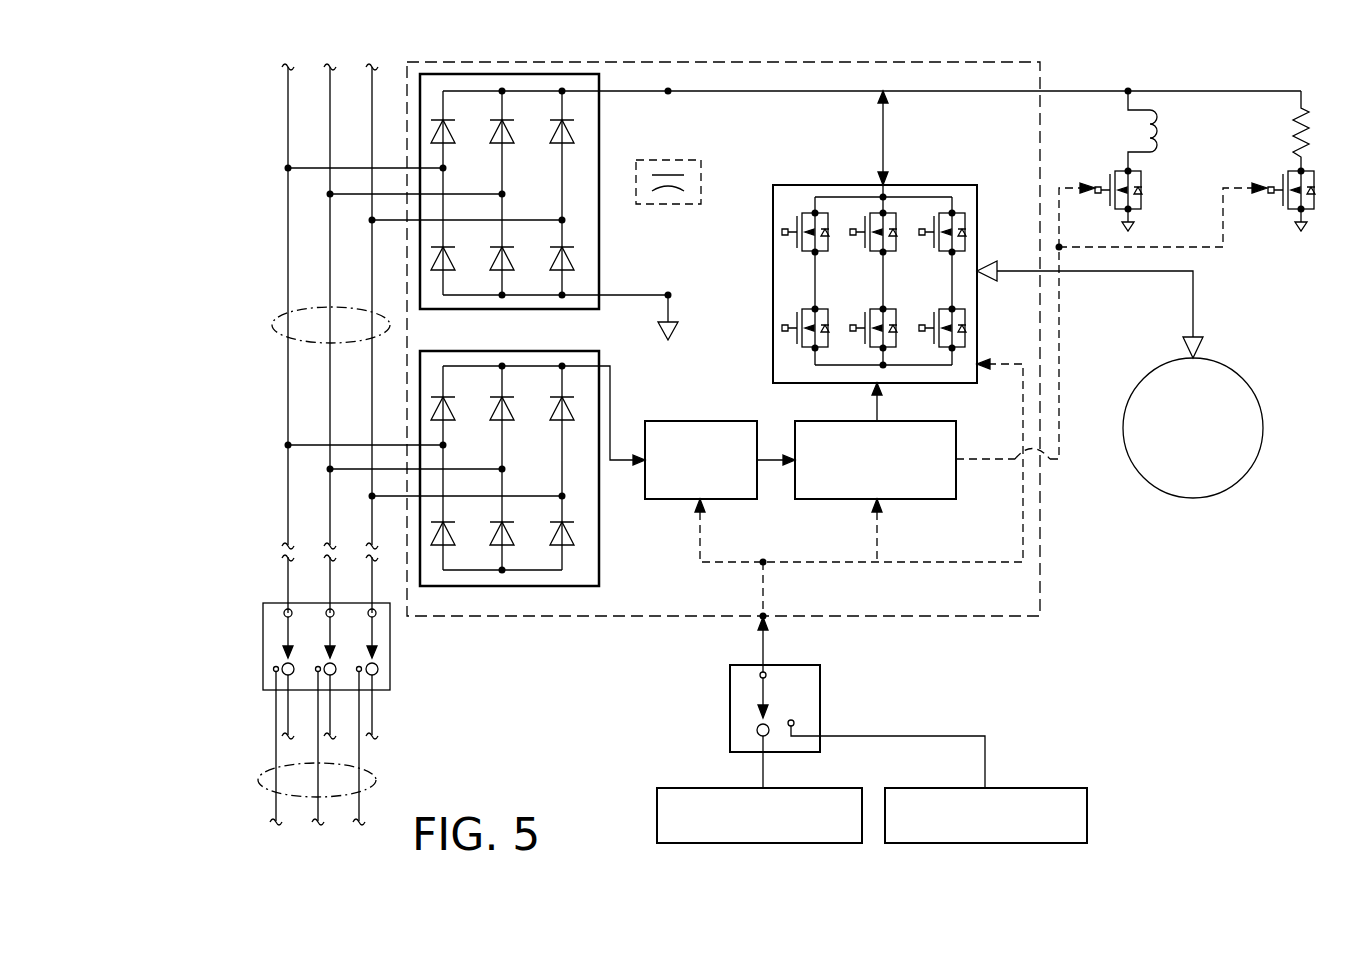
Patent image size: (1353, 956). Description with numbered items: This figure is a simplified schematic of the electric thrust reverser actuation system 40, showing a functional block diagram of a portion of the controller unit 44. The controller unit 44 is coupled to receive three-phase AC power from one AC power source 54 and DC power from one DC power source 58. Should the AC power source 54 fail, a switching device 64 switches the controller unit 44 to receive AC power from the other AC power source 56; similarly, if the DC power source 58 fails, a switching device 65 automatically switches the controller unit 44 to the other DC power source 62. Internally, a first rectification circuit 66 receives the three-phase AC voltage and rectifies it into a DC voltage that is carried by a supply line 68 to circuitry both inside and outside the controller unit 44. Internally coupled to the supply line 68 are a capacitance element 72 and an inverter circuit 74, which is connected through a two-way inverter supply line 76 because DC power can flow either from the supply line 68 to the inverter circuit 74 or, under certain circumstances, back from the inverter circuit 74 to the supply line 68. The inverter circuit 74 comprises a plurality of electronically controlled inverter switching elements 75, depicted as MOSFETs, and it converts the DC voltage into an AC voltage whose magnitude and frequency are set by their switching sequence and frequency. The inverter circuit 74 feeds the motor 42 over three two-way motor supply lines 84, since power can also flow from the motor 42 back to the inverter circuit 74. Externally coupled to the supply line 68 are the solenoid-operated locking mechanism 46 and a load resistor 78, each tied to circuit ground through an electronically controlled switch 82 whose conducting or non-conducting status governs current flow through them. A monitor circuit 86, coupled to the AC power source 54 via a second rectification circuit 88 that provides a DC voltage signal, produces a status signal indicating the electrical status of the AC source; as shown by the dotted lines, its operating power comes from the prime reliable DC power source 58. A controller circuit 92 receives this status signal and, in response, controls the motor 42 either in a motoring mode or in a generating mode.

The motor drive system 40 is at (1173, 57).
The motor 42 is at (1152, 487).
The controller unit 44 is at (687, 62).
The locking mechanism 46 is at (1158, 126).
The AC power source 54 is at (278, 315).
The AC power source 56 is at (376, 776).
The DC power source 58 is at (672, 788).
The DC power source 62 is at (1087, 813).
The switching device 64 is at (385, 655).
The switching device 65 is at (818, 680).
The first rectification circuit 66 is at (588, 130).
The supply line 68 is at (727, 92).
The capacitance element 72 is at (682, 158).
The inverter circuit 74 is at (918, 190).
The inverter switching elements 75 is at (808, 310).
The inverter supply line 76 is at (885, 135).
The load resistor 78 is at (1298, 118).
The electronically controlled switch 82 is at (1118, 170).
The motor supply lines 84 is at (1095, 272).
The monitor circuit 86 is at (733, 500).
The second rectification circuit 88 is at (545, 356).
The controller circuit 92 is at (915, 500).